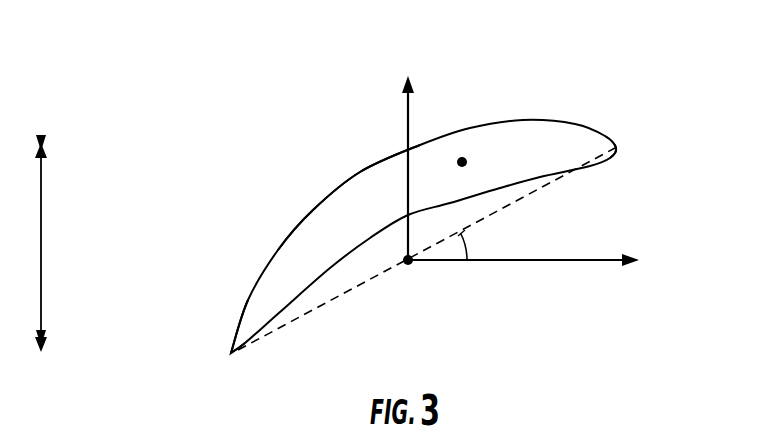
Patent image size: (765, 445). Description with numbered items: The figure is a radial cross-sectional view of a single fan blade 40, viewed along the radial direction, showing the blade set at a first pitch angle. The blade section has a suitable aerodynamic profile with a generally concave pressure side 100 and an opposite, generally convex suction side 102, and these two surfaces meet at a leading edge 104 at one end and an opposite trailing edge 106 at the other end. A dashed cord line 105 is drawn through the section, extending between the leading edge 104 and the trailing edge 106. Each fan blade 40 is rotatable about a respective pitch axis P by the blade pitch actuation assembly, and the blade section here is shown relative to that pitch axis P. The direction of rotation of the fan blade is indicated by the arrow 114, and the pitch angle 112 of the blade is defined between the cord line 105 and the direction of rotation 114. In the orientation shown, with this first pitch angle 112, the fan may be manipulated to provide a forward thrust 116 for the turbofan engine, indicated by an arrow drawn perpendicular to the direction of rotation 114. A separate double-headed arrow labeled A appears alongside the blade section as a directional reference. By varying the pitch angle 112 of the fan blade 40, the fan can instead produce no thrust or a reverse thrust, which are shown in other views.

The fan blade 40 is at (539, 121).
The pressure side 100 is at (382, 279).
The suction side 102 is at (336, 174).
The leading edge 104 is at (628, 143).
The cord line 105 is at (540, 190).
The trailing edge 106 is at (224, 357).
The pitch angle 112 is at (466, 244).
The direction of rotation 114 is at (570, 262).
The forward thrust 116 is at (409, 113).
The axial direction A is at (49, 247).
The pitch axis P is at (462, 162).